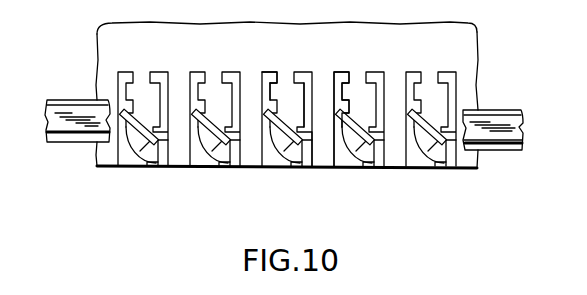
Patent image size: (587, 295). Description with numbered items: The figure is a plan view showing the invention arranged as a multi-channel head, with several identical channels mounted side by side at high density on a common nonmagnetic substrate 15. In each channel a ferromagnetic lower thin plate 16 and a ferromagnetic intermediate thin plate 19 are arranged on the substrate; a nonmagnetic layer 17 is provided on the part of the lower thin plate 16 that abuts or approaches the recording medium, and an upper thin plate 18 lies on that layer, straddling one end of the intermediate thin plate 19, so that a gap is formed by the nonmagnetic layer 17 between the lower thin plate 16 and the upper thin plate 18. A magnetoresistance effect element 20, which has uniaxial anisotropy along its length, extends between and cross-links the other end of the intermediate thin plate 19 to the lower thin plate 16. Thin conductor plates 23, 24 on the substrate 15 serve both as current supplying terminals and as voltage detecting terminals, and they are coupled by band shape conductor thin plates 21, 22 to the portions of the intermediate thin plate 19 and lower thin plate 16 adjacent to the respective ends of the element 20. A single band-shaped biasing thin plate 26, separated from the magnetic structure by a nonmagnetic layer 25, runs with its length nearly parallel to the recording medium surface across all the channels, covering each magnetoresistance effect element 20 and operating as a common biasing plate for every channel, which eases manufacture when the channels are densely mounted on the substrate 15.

The nonmagnetic substrate 15 is at (458, 58).
The lower thin plate 16 is at (315, 147).
The nonmagnetic layer 17 is at (302, 163).
The upper thin plate 18 is at (271, 160).
The intermediate thin plate 19 is at (265, 121).
The magnetoresistance effect element 20 is at (288, 97).
The band shape conductor thin plate 21 is at (261, 86).
The band shape conductor thin plate 22 is at (333, 100).
The thin conductor plate 23 is at (266, 81).
The thin conductor plate 24 is at (306, 76).
The nonmagnetic layer 25 is at (494, 110).
The biasing thin plate 26 is at (517, 123).